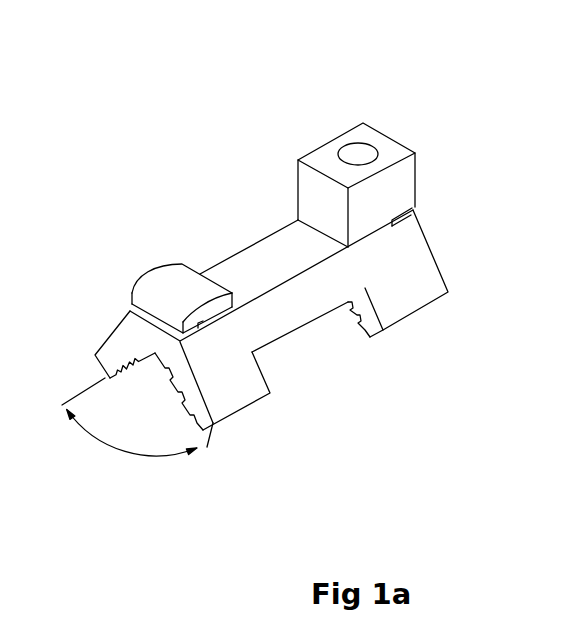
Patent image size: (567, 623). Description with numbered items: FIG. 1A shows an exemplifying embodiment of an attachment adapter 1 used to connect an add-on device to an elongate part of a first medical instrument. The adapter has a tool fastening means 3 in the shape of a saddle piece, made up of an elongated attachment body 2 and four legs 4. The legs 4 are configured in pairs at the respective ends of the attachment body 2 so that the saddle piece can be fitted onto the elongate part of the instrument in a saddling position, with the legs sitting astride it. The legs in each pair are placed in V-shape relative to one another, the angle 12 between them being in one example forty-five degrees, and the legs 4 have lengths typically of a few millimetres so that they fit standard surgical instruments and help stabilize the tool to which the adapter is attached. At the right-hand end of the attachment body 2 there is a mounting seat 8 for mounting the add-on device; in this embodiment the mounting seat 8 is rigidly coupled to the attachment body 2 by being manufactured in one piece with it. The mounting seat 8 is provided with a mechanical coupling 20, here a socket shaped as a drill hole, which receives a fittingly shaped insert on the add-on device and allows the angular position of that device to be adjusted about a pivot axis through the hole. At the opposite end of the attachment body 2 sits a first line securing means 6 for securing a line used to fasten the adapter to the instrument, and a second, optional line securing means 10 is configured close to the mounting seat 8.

The attachment adapter 1 is at (155, 198).
The attachment body 2 is at (272, 253).
The tool fastening means 3 is at (80, 325).
The legs 4 is at (390, 292).
The first line securing means 6 is at (128, 307).
The mounting seat 8 is at (387, 152).
The second line securing means 10 is at (420, 203).
The angle 12 is at (130, 453).
The mechanical coupling 20 is at (360, 152).